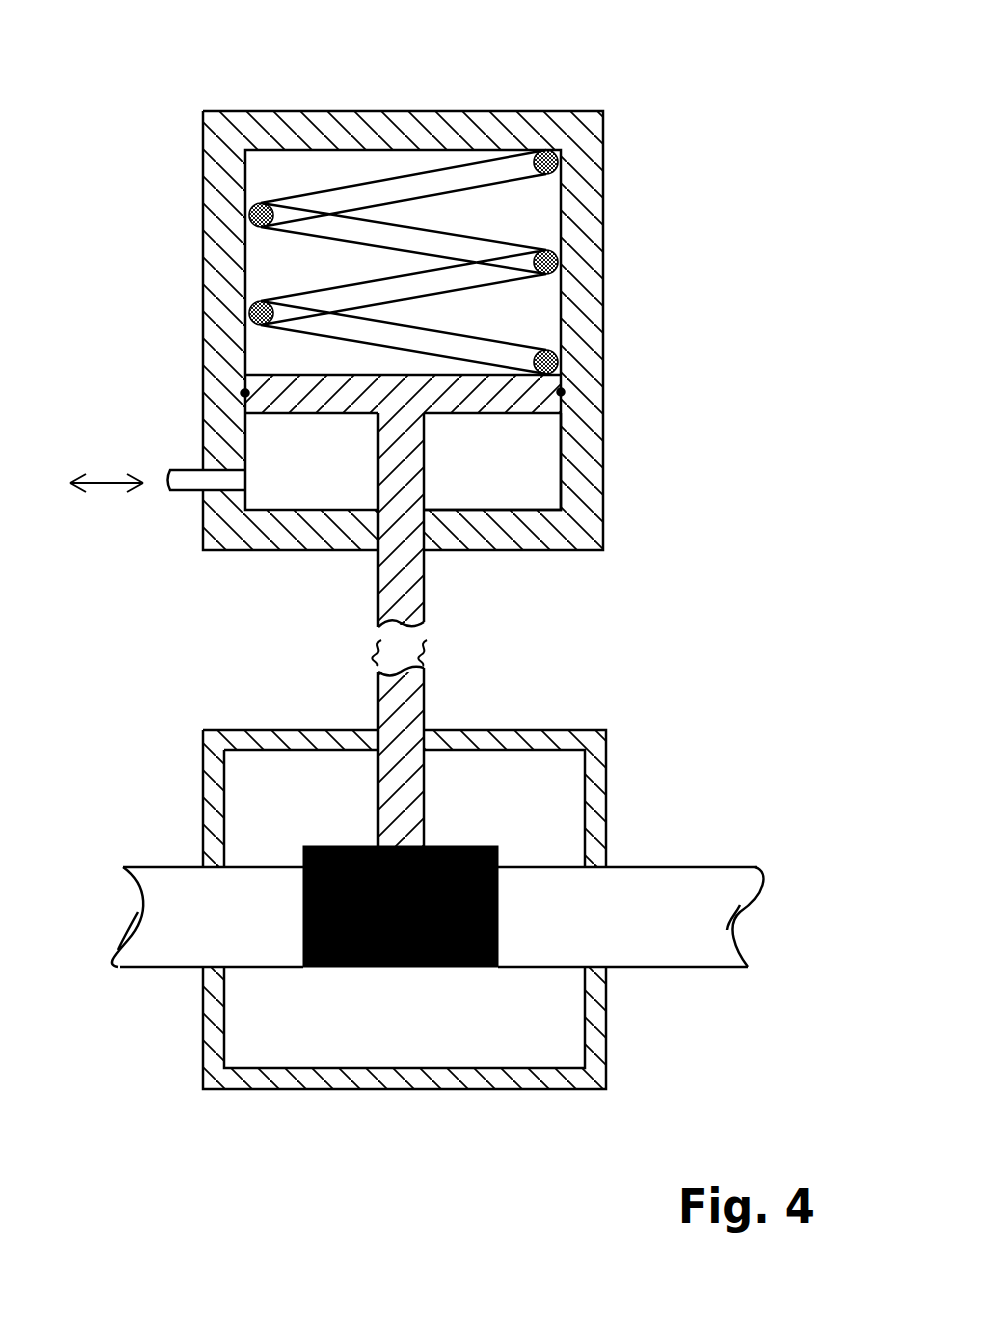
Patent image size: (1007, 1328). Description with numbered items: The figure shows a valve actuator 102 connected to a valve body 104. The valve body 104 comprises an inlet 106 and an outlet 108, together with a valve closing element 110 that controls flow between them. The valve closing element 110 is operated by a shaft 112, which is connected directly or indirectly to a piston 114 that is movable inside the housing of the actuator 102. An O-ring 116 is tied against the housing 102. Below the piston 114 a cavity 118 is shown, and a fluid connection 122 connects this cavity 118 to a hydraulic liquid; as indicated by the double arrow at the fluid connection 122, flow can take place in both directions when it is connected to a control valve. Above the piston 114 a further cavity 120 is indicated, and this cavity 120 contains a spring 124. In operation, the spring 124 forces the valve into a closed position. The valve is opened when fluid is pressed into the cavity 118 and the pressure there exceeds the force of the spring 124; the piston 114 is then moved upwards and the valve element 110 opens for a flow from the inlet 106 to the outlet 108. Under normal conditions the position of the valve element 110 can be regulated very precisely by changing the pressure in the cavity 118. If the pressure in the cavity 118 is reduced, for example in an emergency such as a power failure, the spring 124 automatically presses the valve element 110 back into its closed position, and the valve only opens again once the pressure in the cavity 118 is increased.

The valve actuator 102 is at (727, 115).
The valve body 104 is at (713, 708).
The inlet 106 is at (163, 967).
The outlet 108 is at (643, 963).
The valve closing element 110 is at (478, 846).
The shaft 112 is at (420, 712).
The piston 114 is at (527, 400).
The O-ring 116 is at (562, 392).
The cavity 118 is at (532, 493).
The further cavity 120 is at (537, 318).
The fluid connection 122 is at (178, 491).
The spring 124 is at (302, 231).